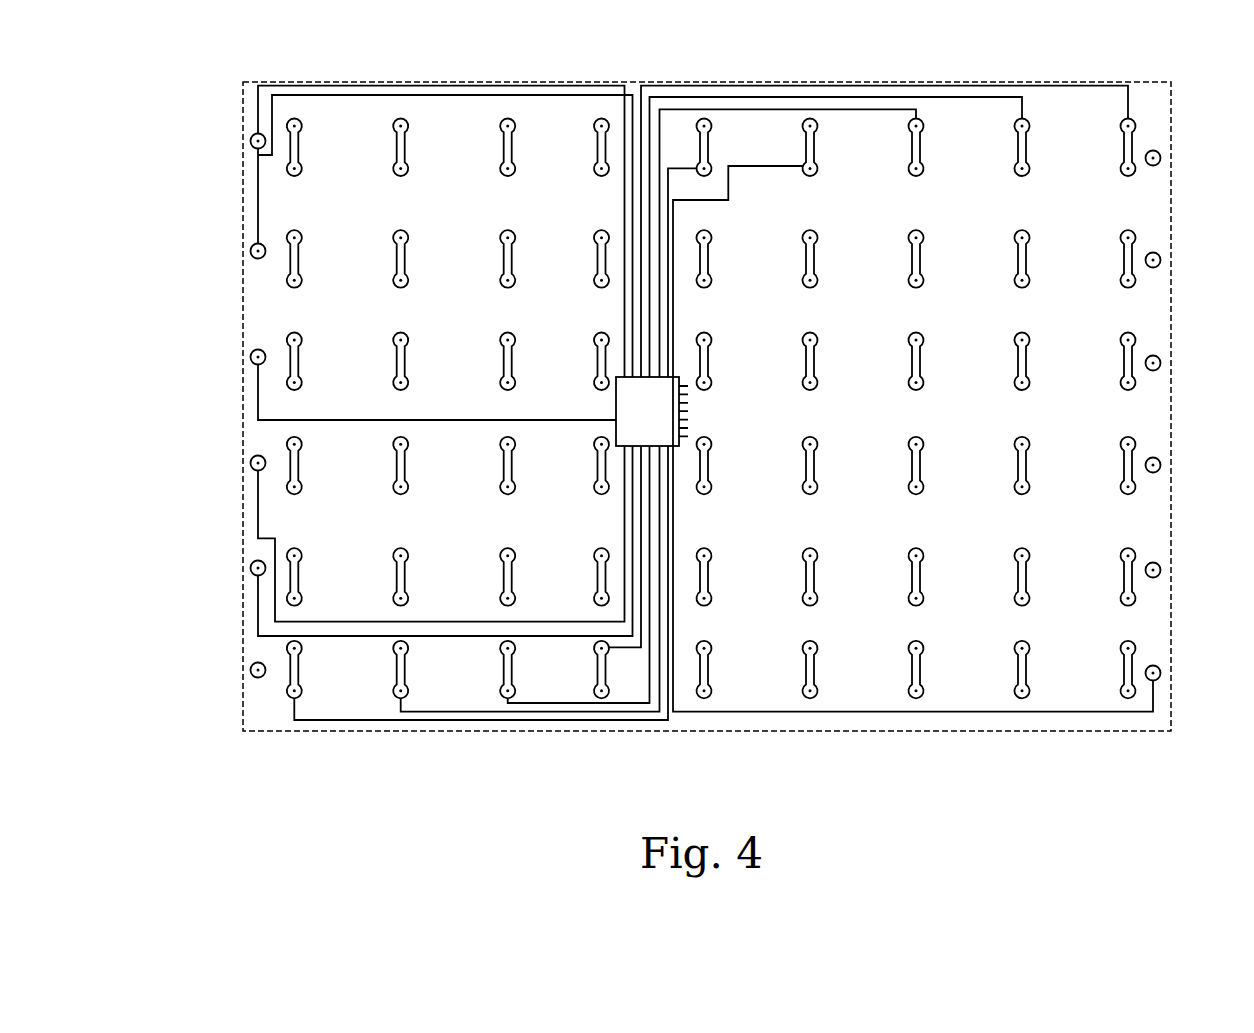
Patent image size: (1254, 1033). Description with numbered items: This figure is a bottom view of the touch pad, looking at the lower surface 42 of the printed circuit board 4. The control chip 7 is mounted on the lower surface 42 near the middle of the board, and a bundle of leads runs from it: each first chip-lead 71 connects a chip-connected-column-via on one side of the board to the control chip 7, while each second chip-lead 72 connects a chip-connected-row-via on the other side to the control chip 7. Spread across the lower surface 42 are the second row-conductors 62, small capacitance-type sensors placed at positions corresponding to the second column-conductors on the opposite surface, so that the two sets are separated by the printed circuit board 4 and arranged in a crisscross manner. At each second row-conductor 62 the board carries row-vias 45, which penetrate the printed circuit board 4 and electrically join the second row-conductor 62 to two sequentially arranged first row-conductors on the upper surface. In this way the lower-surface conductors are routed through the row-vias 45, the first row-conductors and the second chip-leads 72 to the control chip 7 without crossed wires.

The printed circuit board 4 is at (242, 202).
The lower surface 42 is at (353, 140).
The row-via 45 is at (1029, 127).
The second row-conductor 62 is at (1017, 148).
The control chip 7 is at (633, 427).
The first chip-lead 71 is at (1128, 97).
The second chip-lead 72 is at (258, 388).